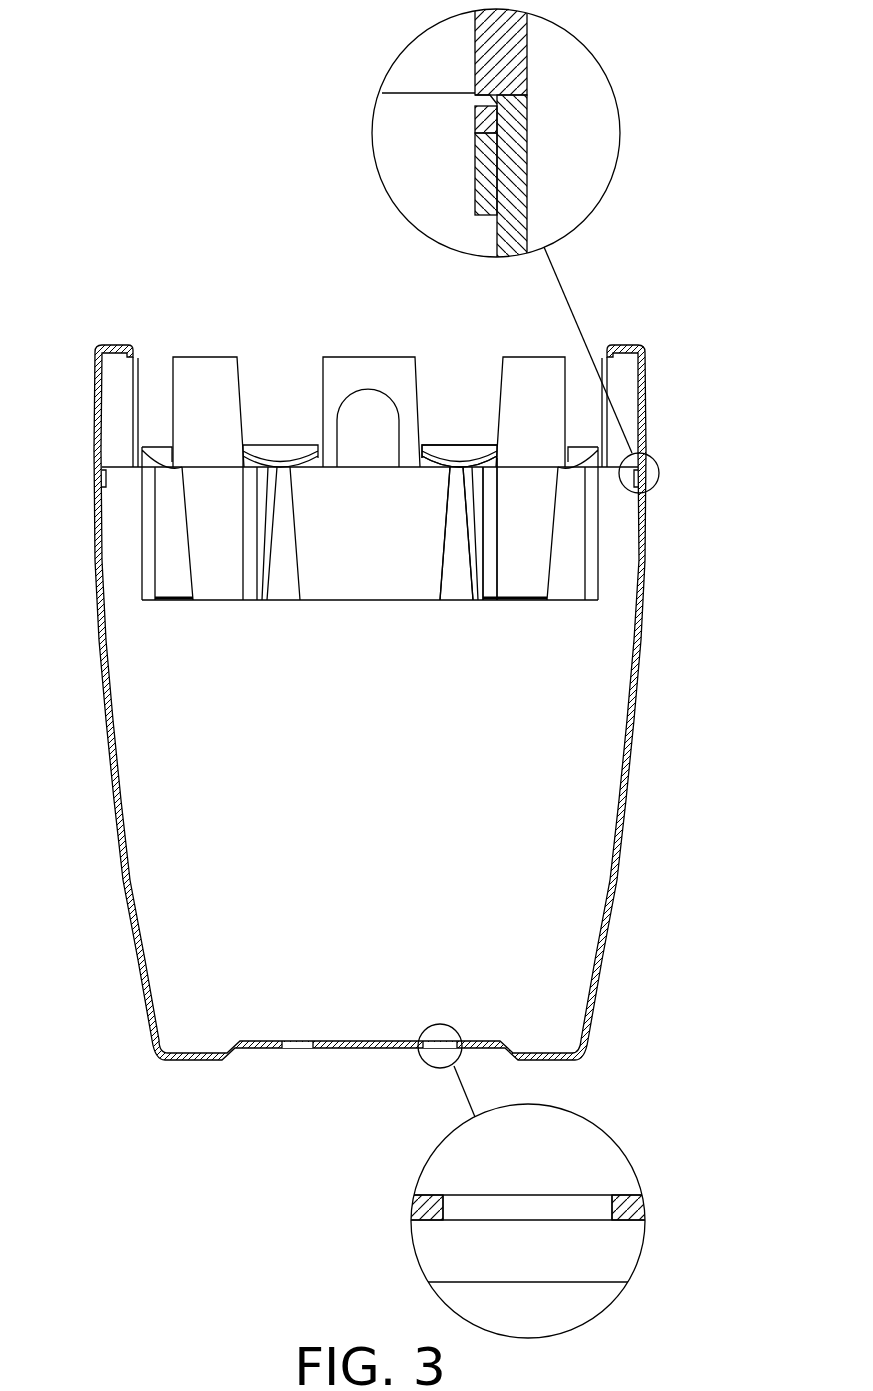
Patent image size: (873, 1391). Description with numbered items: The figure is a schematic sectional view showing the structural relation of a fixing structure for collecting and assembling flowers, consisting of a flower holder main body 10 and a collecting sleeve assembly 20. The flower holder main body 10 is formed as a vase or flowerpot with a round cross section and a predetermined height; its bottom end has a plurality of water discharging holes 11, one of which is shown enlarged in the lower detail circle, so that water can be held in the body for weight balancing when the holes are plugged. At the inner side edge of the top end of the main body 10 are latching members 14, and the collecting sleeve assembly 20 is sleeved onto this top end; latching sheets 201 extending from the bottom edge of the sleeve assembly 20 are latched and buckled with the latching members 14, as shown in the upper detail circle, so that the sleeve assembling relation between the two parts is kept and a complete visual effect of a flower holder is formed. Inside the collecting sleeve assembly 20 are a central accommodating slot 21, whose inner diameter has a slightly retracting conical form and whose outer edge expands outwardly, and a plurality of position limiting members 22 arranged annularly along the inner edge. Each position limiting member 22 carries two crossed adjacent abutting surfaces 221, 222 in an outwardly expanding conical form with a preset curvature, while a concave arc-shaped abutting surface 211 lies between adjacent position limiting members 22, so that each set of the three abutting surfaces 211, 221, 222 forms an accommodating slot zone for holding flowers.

The flower holder main body 10 is at (628, 828).
The water discharging hole 11 is at (297, 1046).
The latching member 14 is at (483, 117).
The collecting sleeve assembly 20 is at (652, 406).
The latching sheet 201 is at (488, 176).
The central accommodating slot 21 is at (345, 562).
The abutting surface 211 is at (465, 550).
The position limiting member 22 is at (457, 452).
The abutting surface 221 is at (487, 513).
The abutting surface 222 is at (424, 447).